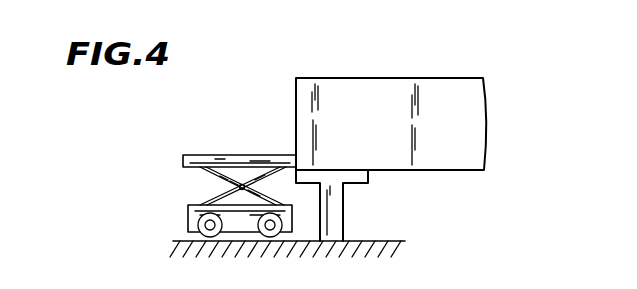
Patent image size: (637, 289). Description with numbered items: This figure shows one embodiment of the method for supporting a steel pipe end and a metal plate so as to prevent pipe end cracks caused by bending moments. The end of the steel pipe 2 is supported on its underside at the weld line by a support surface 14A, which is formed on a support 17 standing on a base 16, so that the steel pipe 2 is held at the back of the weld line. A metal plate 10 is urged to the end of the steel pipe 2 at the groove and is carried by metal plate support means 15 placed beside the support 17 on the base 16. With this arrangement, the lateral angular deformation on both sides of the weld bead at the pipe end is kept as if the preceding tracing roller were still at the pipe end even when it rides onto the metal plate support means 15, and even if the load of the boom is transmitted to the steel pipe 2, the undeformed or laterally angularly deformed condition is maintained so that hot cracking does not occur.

The steel pipe 2 is at (437, 107).
The metal plate 10 is at (245, 157).
The support surface 14A is at (340, 168).
The metal plate support means 15 is at (220, 202).
The base 16 is at (377, 241).
The support 17 is at (337, 207).